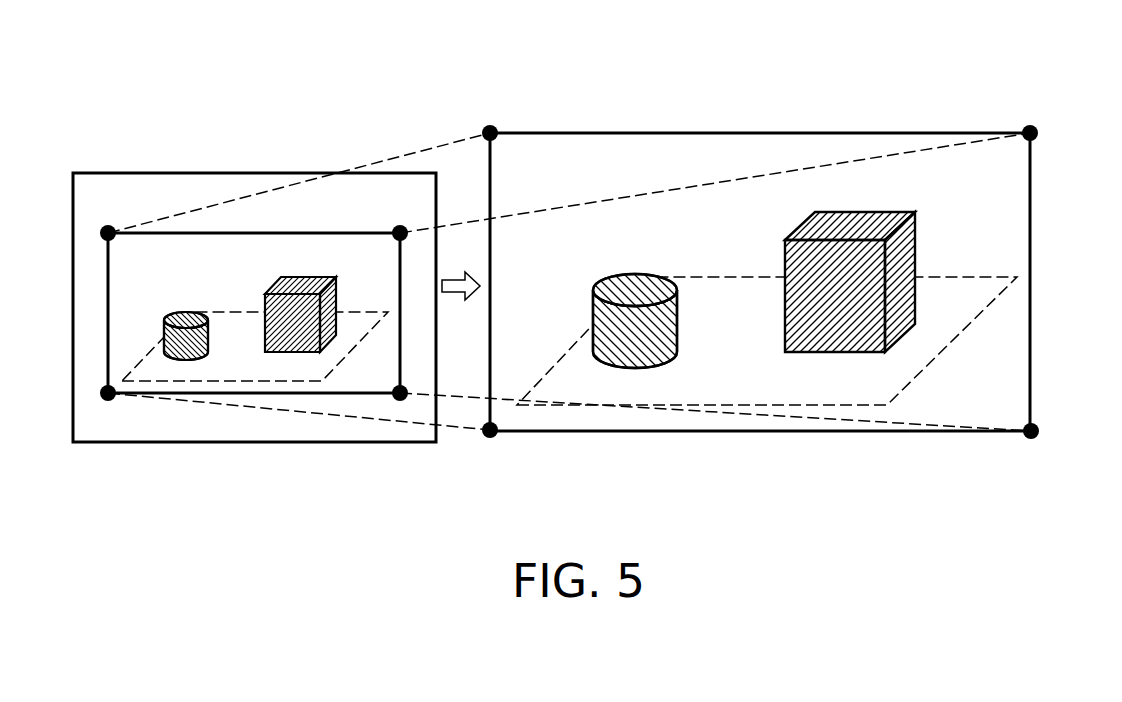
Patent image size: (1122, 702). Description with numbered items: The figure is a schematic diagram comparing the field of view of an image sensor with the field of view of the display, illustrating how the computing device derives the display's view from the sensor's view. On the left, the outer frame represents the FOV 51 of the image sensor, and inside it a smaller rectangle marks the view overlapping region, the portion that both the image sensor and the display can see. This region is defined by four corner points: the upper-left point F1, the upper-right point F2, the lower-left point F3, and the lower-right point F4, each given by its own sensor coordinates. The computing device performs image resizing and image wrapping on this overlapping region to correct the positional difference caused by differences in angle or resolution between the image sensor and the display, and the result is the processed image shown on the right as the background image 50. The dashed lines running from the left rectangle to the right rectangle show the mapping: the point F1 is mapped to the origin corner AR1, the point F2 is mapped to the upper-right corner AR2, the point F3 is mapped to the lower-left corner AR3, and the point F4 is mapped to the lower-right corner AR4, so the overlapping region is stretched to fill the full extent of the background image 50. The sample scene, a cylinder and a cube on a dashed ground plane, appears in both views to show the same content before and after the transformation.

The background image 50 is at (693, 160).
The FOV of the image sensor 51 is at (228, 182).
The first corner point of the view overlapping region F1 is at (108, 226).
The second corner point of the view overlapping region F2 is at (400, 226).
The third corner point of the view overlapping region F3 is at (108, 400).
The fourth corner point of the view overlapping region F4 is at (400, 400).
The first corner point of the background image AR1 is at (520, 117).
The second corner point of the background image AR2 is at (1055, 117).
The third corner point of the background image AR3 is at (525, 452).
The fourth corner point of the background image AR4 is at (1059, 454).